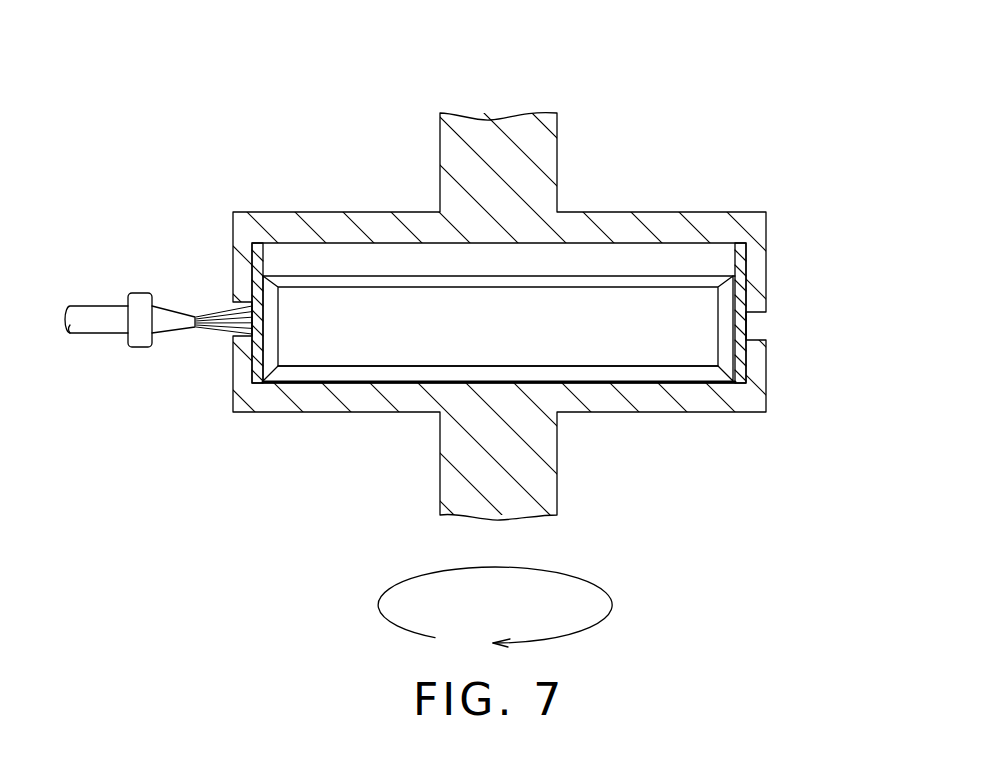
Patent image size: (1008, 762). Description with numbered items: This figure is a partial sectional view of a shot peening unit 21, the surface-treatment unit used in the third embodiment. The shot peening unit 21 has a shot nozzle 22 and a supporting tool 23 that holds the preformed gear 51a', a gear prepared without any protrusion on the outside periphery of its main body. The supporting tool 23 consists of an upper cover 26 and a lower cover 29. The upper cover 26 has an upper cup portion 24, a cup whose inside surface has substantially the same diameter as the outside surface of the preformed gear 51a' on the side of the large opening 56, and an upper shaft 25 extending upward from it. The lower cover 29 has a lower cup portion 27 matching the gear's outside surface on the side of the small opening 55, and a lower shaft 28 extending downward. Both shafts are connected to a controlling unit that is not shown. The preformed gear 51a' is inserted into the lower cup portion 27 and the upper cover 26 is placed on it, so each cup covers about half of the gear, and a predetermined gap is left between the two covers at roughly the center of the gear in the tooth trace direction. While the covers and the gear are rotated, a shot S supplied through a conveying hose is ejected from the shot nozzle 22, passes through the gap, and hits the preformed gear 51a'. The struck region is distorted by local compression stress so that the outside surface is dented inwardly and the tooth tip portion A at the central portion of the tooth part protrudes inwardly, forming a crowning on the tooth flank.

The shot peening unit 21 is at (550, 80).
The shot nozzle 22 is at (93, 312).
The supporting tool 23 is at (672, 83).
The upper cup portion 24 is at (575, 222).
The upper shaft 25 is at (450, 153).
The upper cover 26 is at (678, 213).
The lower cup portion 27 is at (658, 402).
The lower shaft 28 is at (545, 486).
The lower cover 29 is at (322, 410).
The preformed gear 51a' is at (793, 301).
The small opening 55 is at (383, 373).
The large opening 56 is at (298, 250).
The shot S is at (218, 312).
The tooth tip portion A is at (278, 335).